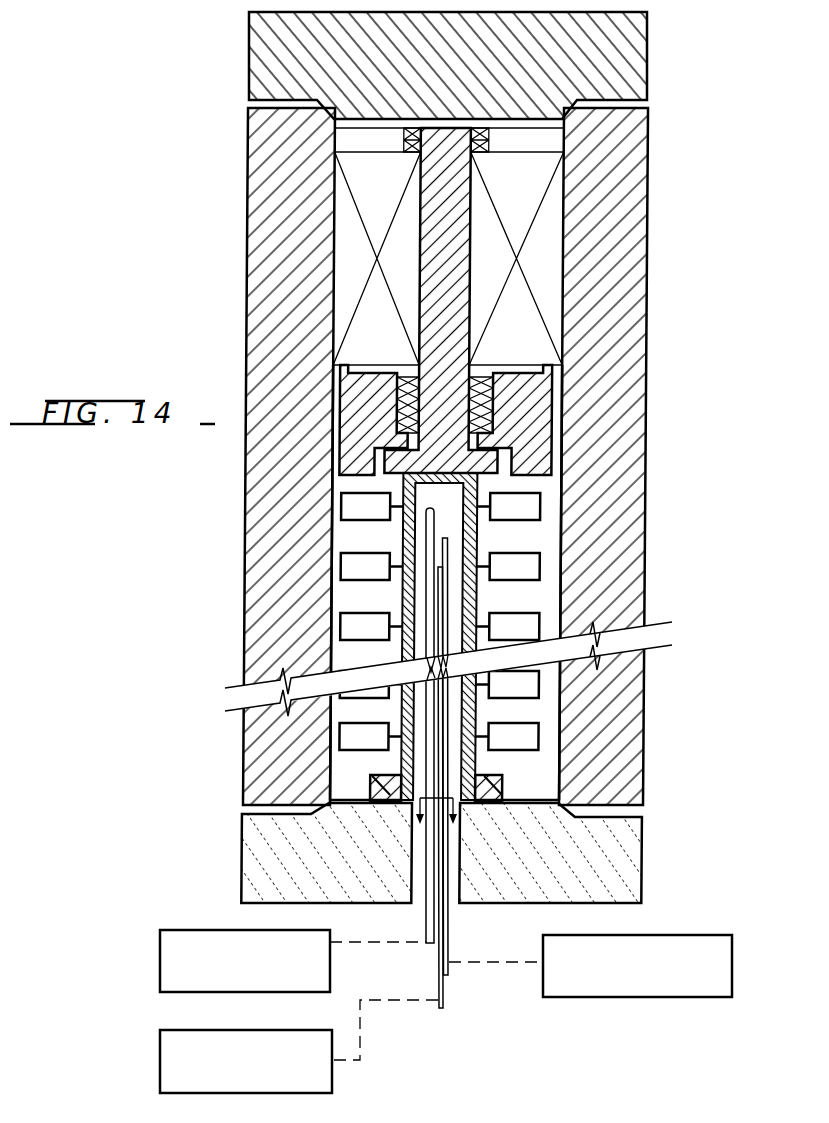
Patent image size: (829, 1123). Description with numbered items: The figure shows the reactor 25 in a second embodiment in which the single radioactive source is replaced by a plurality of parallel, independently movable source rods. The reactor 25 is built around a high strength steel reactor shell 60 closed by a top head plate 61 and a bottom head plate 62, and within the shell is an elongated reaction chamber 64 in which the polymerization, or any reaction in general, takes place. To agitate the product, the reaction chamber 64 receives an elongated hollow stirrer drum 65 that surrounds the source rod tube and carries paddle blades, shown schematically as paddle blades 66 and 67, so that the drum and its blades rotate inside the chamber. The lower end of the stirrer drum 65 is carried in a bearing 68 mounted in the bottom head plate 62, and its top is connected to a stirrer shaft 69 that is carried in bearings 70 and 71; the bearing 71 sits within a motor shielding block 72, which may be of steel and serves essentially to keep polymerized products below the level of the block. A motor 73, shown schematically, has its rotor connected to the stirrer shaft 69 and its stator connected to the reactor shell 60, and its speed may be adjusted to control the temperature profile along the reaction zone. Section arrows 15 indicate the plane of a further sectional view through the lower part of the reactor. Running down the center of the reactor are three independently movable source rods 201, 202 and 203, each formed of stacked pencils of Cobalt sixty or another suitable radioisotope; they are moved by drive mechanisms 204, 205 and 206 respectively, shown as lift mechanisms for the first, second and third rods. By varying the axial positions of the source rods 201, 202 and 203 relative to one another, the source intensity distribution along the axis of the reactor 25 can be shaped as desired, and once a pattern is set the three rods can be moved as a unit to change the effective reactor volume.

The reactor 25 is at (238, 282).
The top head plate 61 is at (650, 57).
The reactor shell 60 is at (632, 250).
The bottom head plate 62 is at (645, 858).
The reaction chamber 64 is at (353, 598).
The stirrer drum 65 is at (403, 533).
The paddle blade 66 is at (342, 505).
The paddle blade 67 is at (340, 632).
The bearing 68 is at (503, 788).
The stirrer shaft 69 is at (430, 314).
The bearing 70 is at (493, 145).
The bearing 71 is at (487, 373).
The motor shielding block 72 is at (537, 432).
The motor 73 is at (540, 296).
The section arrows 15 is at (436, 821).
The source rod 201 is at (426, 920).
The source rod 202 is at (442, 997).
The source rod 203 is at (449, 927).
The drive mechanism 204 is at (160, 958).
The drive mechanism 205 is at (160, 1062).
The drive mechanism 206 is at (735, 978).